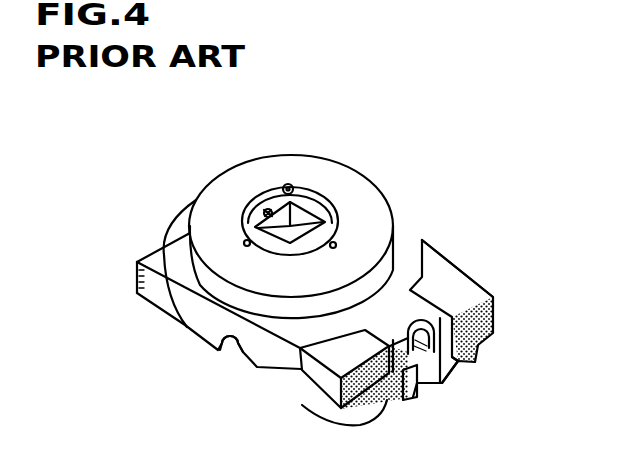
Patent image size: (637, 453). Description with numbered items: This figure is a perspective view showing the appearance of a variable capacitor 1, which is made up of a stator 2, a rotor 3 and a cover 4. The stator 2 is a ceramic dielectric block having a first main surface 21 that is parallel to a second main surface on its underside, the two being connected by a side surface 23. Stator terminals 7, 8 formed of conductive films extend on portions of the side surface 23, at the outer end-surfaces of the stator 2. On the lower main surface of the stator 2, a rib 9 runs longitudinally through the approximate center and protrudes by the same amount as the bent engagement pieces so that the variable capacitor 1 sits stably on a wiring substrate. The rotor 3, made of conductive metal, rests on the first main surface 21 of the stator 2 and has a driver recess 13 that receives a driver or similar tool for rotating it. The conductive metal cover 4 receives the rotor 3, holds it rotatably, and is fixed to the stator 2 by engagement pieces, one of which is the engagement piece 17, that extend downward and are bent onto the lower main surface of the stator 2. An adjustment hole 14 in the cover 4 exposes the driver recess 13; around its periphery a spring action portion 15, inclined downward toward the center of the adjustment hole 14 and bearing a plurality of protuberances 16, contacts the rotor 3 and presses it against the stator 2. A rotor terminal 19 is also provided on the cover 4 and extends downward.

The variable capacitor 1 is at (88, 140).
The stator 2 is at (135, 261).
The rotor 3 is at (323, 206).
The cover 4 is at (257, 160).
The stator terminal 7 is at (137, 282).
The stator terminal 8 is at (395, 392).
The rib 9 is at (460, 361).
The driver recess 13 is at (332, 211).
The adjustment hole 14 is at (251, 209).
The spring action portion 15 is at (273, 178).
The protuberances 16 is at (293, 184).
The engagement piece 17 is at (253, 370).
The rotor terminal 19 is at (443, 389).
The first main surface 21 is at (448, 287).
The side surface 23 is at (315, 381).